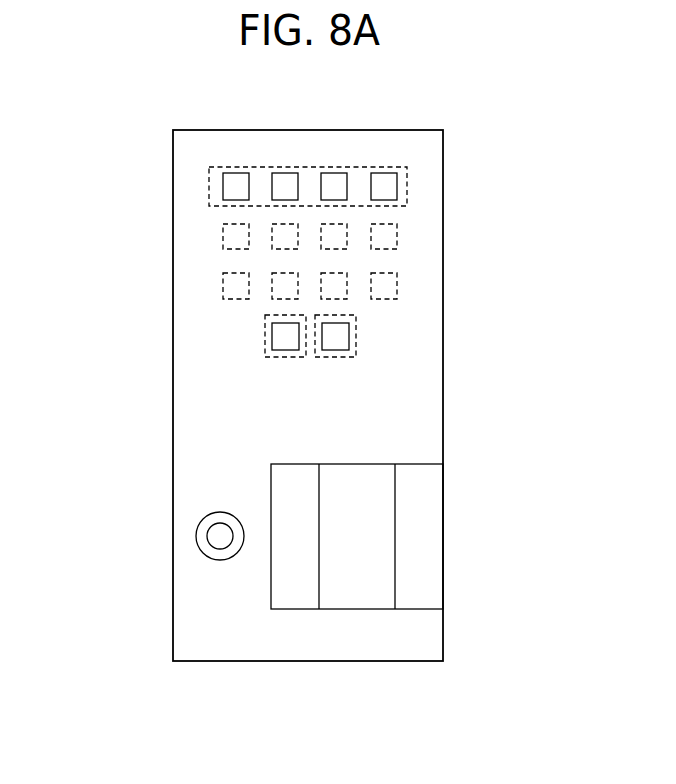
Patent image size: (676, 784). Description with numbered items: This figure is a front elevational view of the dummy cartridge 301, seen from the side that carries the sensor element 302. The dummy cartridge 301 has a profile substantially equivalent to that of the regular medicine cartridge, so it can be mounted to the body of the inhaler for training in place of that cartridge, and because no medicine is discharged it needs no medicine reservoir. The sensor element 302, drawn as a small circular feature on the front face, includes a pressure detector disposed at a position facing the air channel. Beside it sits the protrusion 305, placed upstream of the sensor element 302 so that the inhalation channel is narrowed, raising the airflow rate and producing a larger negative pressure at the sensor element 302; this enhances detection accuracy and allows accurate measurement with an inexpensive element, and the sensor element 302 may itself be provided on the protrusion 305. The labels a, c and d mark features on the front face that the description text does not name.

The dummy cartridge 301 is at (173, 613).
The sensor element 302 is at (195, 534).
The protrusion 305 is at (443, 528).
The key group a is at (208, 182).
The key c is at (265, 343).
The key d is at (356, 342).